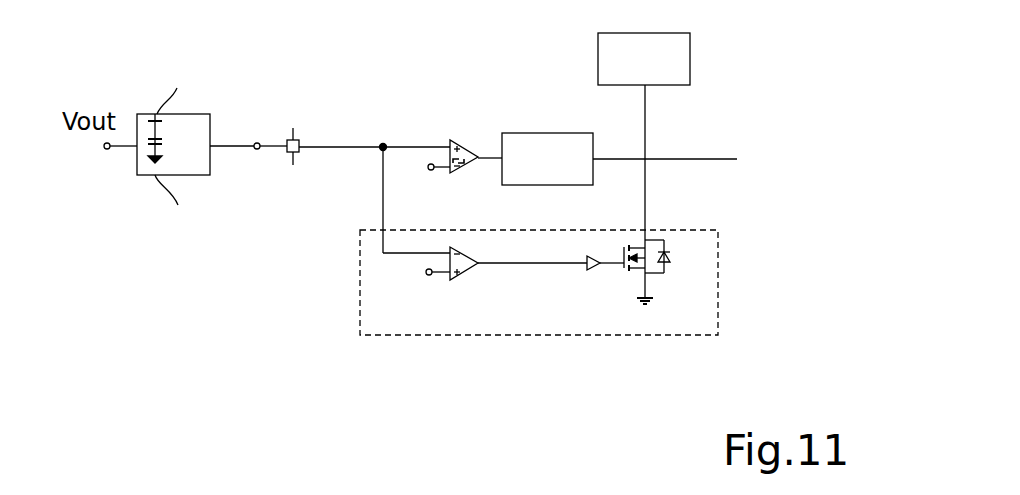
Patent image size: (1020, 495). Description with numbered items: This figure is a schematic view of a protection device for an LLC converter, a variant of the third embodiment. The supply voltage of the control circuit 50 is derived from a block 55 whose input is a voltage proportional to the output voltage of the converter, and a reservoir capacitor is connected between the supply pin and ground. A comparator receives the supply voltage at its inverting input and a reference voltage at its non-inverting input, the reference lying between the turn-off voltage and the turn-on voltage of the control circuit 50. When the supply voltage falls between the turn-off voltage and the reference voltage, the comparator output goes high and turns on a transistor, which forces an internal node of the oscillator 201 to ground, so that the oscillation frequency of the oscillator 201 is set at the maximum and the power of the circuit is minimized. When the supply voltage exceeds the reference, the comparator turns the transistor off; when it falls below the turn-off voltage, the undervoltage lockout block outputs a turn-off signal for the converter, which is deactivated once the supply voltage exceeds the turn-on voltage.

The control circuit 50 is at (466, 96).
The block 55 is at (211, 173).
The oscillator 201 is at (622, 70).